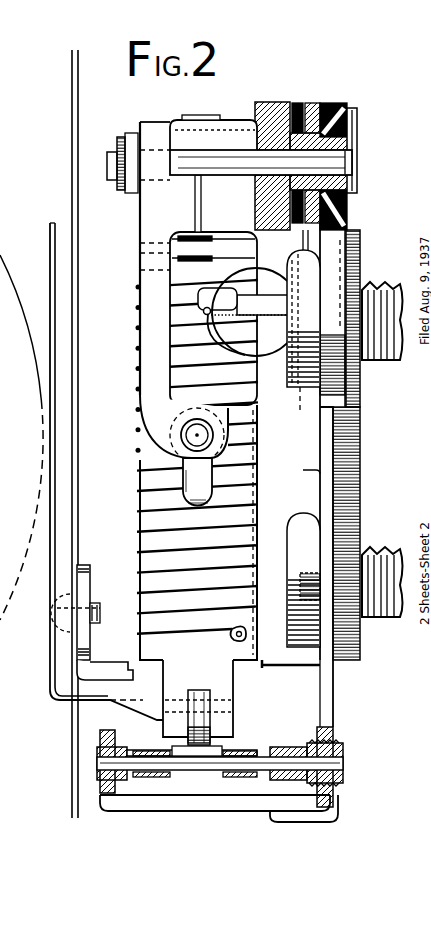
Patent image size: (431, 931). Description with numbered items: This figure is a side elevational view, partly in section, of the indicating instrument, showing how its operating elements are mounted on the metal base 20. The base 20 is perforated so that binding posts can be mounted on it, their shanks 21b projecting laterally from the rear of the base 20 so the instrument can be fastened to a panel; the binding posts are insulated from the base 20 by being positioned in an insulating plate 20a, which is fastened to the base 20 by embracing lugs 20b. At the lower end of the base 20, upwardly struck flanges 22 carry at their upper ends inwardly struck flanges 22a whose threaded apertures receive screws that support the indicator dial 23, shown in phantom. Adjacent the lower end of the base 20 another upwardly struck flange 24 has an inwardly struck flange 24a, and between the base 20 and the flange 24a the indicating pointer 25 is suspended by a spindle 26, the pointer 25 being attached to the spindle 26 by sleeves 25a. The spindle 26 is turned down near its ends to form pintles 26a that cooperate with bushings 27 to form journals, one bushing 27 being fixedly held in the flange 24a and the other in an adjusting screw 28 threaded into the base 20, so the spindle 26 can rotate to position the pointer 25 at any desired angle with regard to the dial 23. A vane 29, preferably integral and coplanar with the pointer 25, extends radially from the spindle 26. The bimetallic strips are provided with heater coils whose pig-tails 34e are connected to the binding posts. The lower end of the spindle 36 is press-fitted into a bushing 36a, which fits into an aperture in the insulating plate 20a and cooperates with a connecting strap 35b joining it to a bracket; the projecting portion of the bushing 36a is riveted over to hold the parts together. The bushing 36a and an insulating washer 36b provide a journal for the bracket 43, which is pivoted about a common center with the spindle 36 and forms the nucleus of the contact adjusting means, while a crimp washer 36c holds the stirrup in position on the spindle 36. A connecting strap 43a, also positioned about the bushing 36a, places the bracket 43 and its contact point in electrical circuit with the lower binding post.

The base 20 is at (358, 412).
The insulating plate 20a is at (335, 232).
The embracing lugs 20b is at (310, 578).
The shanks of binding posts 21b is at (378, 283).
The upwardly struck flanges 22 is at (104, 668).
The inwardly struck flanges 22a is at (100, 612).
The indicator dial 23 is at (72, 130).
The upwardly struck flange 24 is at (338, 818).
The inwardly struck flange 24a is at (100, 740).
The indicating pointer 25 is at (50, 690).
The sleeves 25a is at (258, 750).
The spindle 26 is at (210, 770).
The pintles 26a is at (262, 752).
The bushings 27 is at (100, 772).
The adjusting screw 28 is at (345, 760).
The vane 29 is at (236, 726).
The pig-tails 34e is at (0, 262).
The connecting strap 35b is at (358, 125).
The spindle 36 is at (236, 150).
The bushing 36a is at (268, 102).
The insulating washer 36b is at (300, 103).
The crimp washer 36c is at (120, 148).
The bracket 43 is at (338, 103).
The connecting strap 43a is at (332, 103).